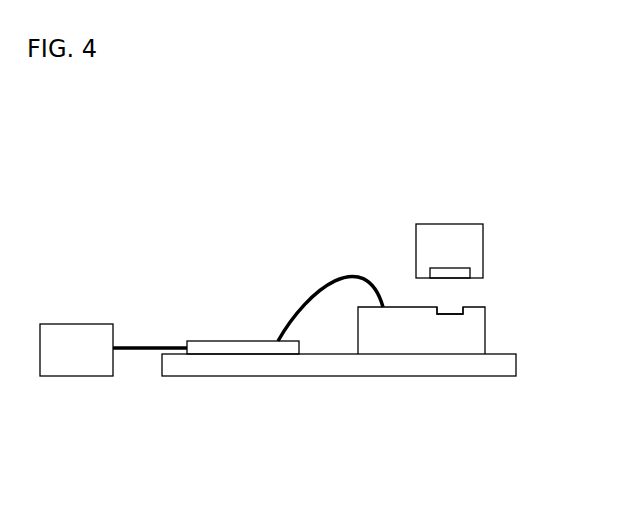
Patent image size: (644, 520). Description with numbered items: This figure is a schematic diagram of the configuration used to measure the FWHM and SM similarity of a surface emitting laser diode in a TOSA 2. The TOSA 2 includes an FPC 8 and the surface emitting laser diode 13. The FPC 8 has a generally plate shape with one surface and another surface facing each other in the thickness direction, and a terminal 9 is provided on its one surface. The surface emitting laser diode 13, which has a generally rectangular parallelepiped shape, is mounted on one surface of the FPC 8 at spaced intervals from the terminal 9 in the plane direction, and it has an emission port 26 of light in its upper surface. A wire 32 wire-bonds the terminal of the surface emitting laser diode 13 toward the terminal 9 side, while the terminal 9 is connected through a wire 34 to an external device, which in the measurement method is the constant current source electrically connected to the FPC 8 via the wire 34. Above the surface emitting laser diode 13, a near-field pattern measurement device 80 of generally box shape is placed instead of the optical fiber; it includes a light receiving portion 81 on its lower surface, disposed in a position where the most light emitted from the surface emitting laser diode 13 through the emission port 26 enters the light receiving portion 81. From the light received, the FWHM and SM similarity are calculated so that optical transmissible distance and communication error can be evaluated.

The TOSA 2 is at (337, 378).
The FPC 8 is at (516, 362).
The terminal 9 is at (238, 341).
The surface emitting laser diode 13 is at (485, 327).
The emission port 26 is at (450, 313).
The wire 32 is at (318, 283).
The wire 34 is at (148, 345).
The near-field pattern measurement device 80 is at (483, 244).
The light receiving portion 81 is at (450, 268).